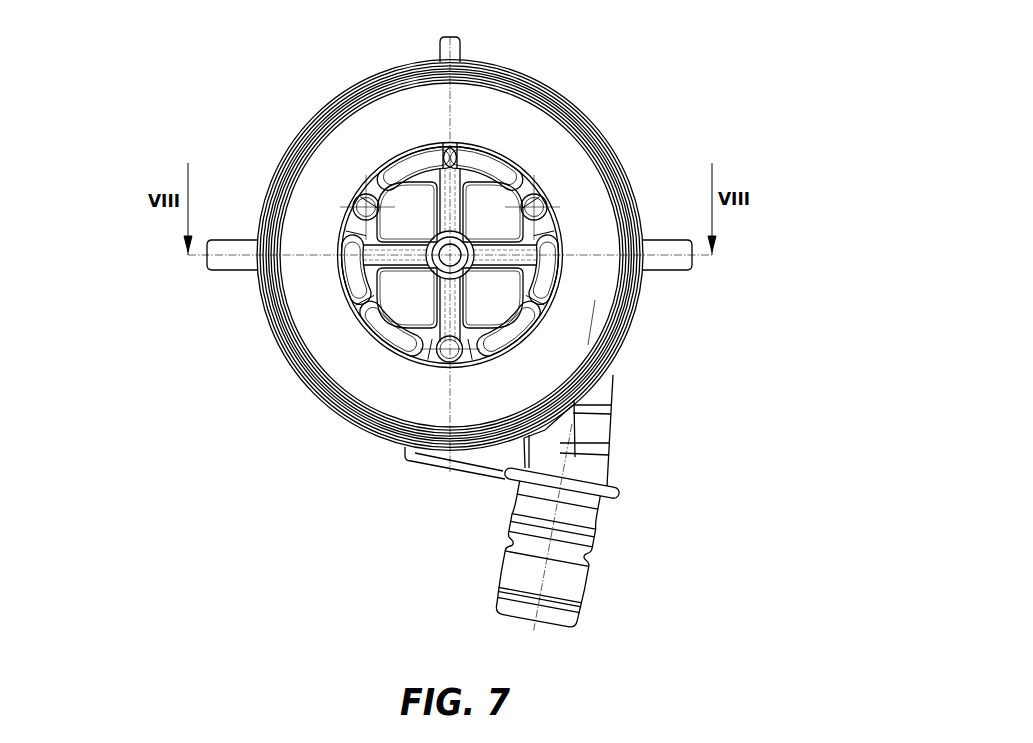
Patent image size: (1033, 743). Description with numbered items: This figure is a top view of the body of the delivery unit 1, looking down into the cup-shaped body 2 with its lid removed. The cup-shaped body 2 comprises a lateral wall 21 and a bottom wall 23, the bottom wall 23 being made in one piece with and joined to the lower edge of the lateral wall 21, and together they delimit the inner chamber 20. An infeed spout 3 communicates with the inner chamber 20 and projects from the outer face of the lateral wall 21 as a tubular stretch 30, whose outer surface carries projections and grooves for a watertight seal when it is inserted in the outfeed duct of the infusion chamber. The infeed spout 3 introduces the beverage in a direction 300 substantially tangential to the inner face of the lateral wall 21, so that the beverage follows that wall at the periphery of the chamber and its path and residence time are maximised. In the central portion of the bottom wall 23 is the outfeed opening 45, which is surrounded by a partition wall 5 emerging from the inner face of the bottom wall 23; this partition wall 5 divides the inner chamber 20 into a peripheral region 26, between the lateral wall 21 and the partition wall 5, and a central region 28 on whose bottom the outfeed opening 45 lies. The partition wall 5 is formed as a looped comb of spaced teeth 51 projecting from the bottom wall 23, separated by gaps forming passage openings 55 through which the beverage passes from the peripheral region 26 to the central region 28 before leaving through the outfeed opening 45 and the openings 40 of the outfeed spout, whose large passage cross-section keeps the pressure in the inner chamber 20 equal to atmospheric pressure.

The delivery unit 1 is at (266, 79).
The cup-shaped body 2 is at (657, 295).
The infeed spout 3 is at (486, 562).
The partition wall 5 is at (551, 174).
The inner chamber 20 is at (309, 341).
The lateral wall 21 is at (627, 317).
The bottom wall 23 is at (308, 302).
The peripheral region 26 is at (388, 144).
The central region 28 is at (424, 225).
The tubular stretch 30 is at (583, 567).
The openings 40 is at (475, 223).
The outfeed opening 45 is at (518, 158).
The teeth 51 is at (368, 328).
The passage openings 55 is at (444, 147).
The direction 300 is at (595, 315).